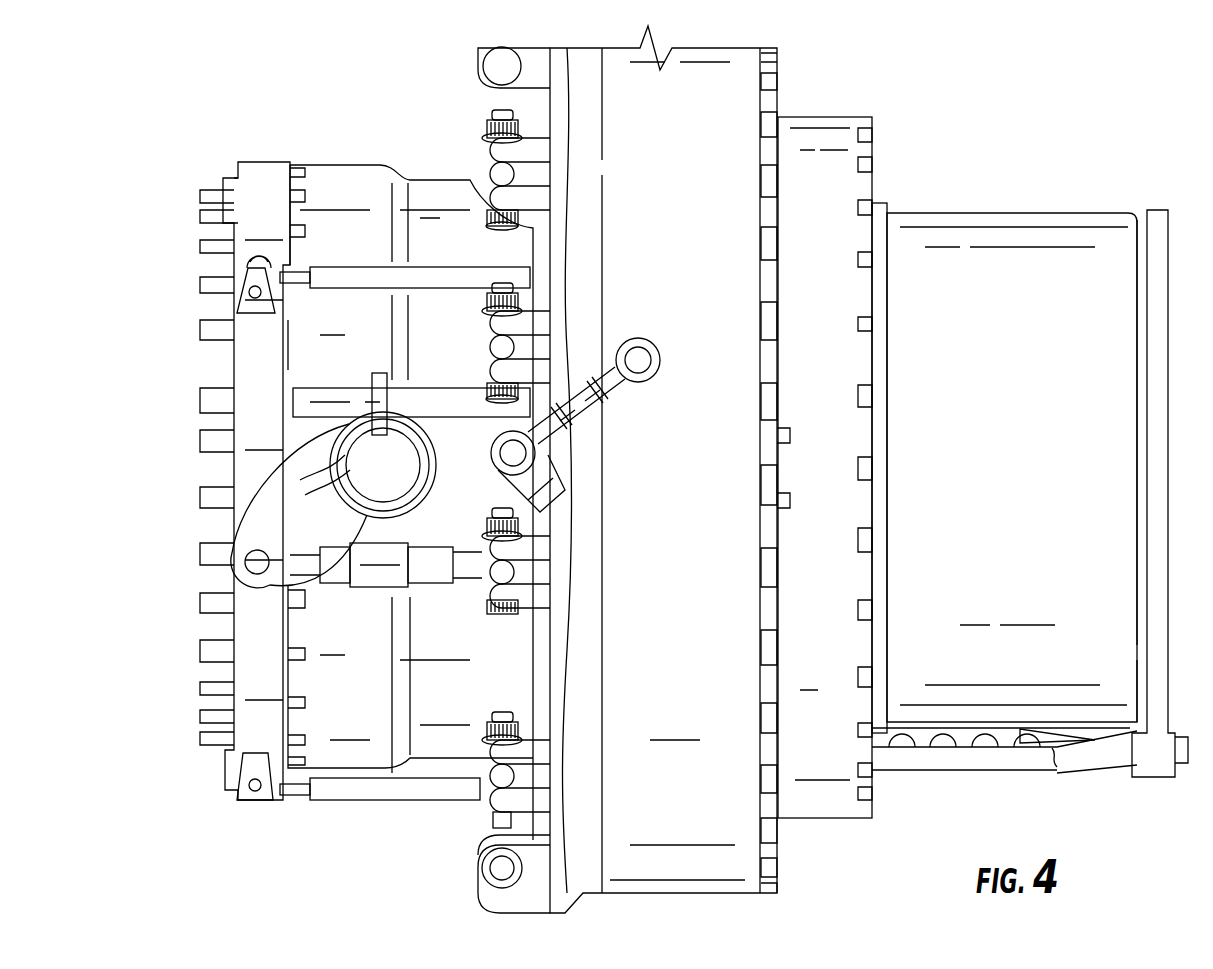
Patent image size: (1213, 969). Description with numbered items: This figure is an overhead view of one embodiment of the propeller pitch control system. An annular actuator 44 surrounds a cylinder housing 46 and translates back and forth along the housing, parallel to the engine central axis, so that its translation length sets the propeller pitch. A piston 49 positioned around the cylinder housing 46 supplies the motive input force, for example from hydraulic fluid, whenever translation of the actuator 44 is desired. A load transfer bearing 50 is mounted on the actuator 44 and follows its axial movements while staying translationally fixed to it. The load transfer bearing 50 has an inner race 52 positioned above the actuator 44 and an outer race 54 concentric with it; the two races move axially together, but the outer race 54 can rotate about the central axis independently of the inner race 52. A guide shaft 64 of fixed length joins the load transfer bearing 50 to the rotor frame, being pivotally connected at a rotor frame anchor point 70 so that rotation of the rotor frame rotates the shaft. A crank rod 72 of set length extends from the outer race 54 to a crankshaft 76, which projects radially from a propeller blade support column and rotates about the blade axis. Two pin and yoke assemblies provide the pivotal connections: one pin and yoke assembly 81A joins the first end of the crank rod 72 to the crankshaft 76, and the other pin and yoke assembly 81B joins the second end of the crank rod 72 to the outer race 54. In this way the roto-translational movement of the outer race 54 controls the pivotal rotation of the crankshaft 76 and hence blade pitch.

The annular actuator 44 is at (490, 227).
The cylinder housing 46 is at (1022, 213).
The piston 49 is at (453, 388).
The load transfer bearing 50 is at (677, 486).
The inner race 52 is at (838, 820).
The outer race 54 is at (710, 895).
The guide shaft 64 is at (590, 427).
The rotor frame anchor point 70 is at (642, 340).
The crank rod 72 is at (378, 592).
The crankshaft 76 is at (270, 513).
The pin and yoke assembly 81A is at (250, 593).
The pin and yoke assembly 81B is at (503, 613).